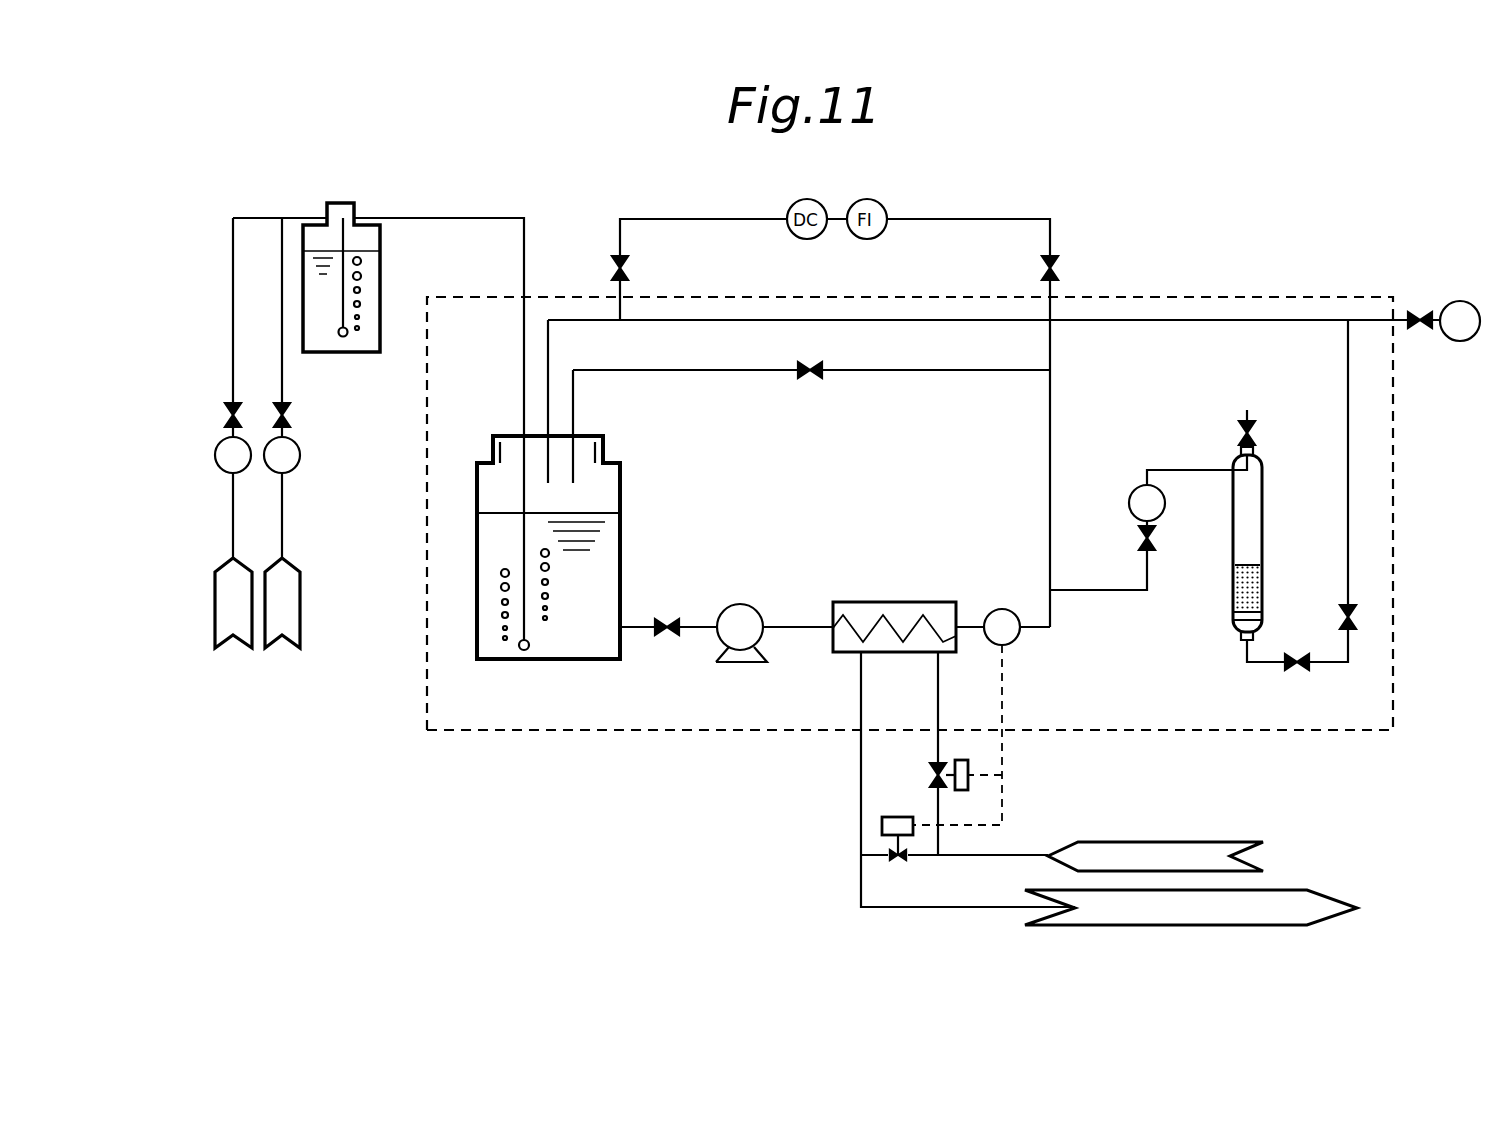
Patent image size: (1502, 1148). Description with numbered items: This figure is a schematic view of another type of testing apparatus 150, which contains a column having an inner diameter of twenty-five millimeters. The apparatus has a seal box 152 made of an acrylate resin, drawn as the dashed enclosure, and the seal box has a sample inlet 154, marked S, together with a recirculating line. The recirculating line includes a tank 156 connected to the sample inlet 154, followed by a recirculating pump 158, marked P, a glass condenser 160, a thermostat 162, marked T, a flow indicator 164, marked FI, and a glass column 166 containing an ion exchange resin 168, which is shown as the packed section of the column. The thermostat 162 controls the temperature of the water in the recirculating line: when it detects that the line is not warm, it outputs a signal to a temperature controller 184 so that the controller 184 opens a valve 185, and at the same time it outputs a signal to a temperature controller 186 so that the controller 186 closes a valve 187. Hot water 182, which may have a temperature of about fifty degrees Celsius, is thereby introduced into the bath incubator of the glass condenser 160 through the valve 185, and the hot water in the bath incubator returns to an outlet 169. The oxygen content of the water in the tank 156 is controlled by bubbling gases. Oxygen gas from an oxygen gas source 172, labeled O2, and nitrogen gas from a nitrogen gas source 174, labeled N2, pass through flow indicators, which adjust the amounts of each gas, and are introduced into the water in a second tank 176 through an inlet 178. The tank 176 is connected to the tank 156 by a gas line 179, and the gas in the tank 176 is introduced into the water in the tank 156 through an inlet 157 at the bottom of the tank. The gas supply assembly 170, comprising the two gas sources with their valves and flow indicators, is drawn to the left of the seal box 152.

The testing apparatus 150 is at (410, 732).
The seal box 152 is at (674, 748).
The sample inlet 154 is at (1466, 300).
The tank 156 is at (620, 566).
The inlet 157 is at (523, 652).
The recirculating pump 158 is at (750, 604).
The glass condenser 160 is at (900, 602).
The thermostat 162 is at (1003, 608).
The flow indicator 164 is at (1130, 503).
The glass column 166 is at (1262, 514).
The ion exchange resin 168 is at (1262, 588).
The outlet 169 is at (1110, 928).
The gas supply assembly 170 is at (214, 490).
The oxygen gas source 172 is at (215, 614).
The nitrogen gas source 174 is at (300, 618).
The tank 176 is at (380, 283).
The inlet 178 is at (347, 335).
The gas supply line 179 is at (462, 218).
The hot water 182 is at (1112, 842).
The temperature controller 184 is at (968, 790).
The valve 185 is at (934, 768).
The temperature controller 186 is at (898, 817).
The valve 187 is at (900, 862).